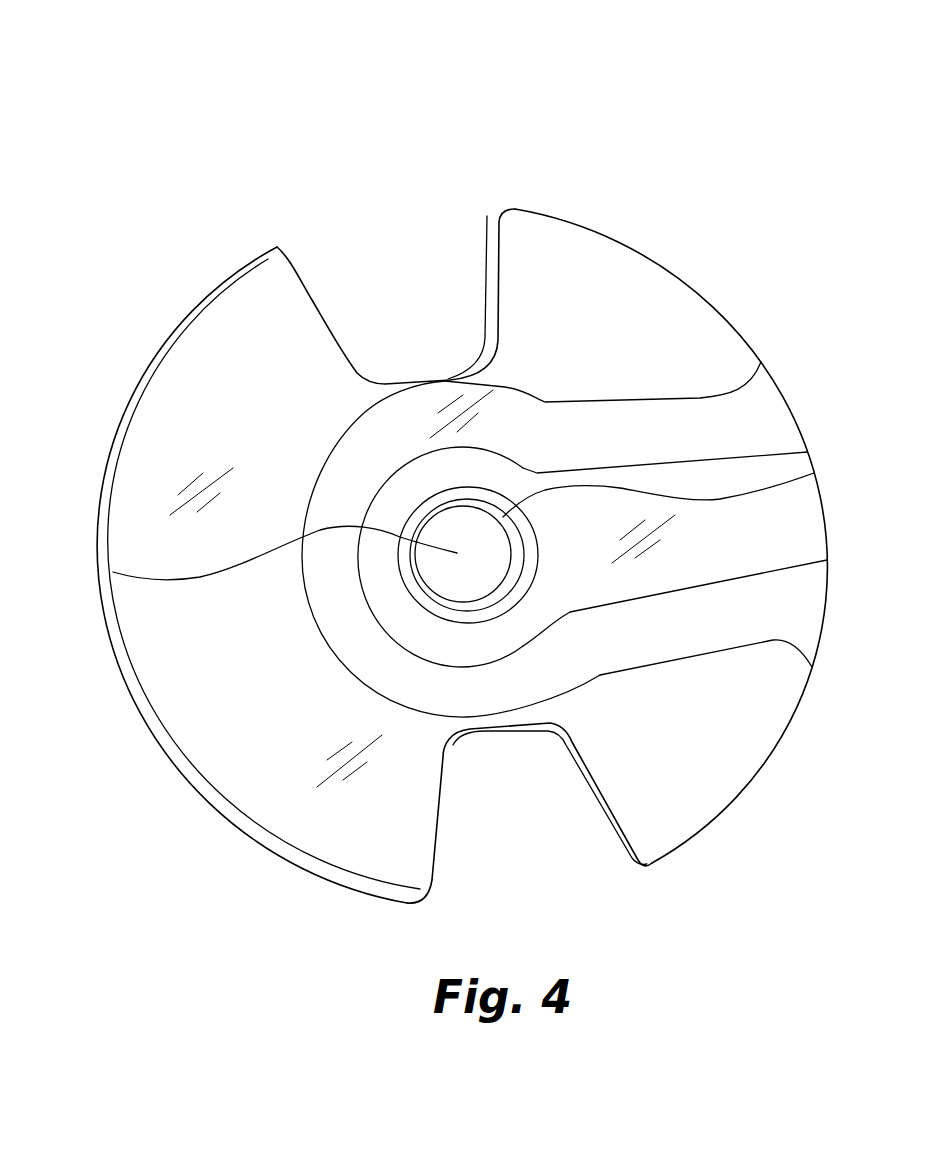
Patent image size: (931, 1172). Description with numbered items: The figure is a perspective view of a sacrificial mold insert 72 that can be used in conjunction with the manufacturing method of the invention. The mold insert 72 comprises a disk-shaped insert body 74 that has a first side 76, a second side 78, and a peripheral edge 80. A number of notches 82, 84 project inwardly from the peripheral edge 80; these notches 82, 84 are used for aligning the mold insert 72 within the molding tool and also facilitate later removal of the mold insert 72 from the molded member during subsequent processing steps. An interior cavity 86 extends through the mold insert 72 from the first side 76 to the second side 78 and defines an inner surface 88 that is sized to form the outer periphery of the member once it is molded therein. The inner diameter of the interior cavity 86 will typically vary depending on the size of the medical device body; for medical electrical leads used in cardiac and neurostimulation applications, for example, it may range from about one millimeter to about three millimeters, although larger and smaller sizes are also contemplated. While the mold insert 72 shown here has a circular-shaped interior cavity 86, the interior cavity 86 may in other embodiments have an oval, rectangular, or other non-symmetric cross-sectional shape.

The sacrificial mold insert 72 is at (490, 108).
The insert body 74 is at (668, 306).
The first side 76 is at (727, 734).
The second side 78 is at (142, 443).
The peripheral edge 80 is at (259, 836).
The notch 82 is at (340, 260).
The notch 84 is at (599, 857).
The interior cavity 86 is at (113, 572).
The inner surface 88 is at (807, 452).